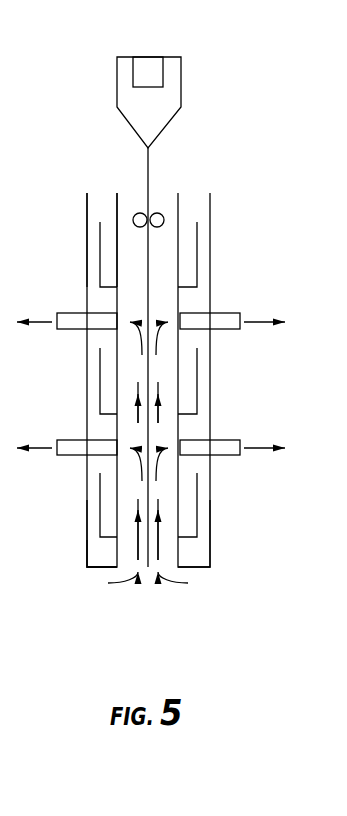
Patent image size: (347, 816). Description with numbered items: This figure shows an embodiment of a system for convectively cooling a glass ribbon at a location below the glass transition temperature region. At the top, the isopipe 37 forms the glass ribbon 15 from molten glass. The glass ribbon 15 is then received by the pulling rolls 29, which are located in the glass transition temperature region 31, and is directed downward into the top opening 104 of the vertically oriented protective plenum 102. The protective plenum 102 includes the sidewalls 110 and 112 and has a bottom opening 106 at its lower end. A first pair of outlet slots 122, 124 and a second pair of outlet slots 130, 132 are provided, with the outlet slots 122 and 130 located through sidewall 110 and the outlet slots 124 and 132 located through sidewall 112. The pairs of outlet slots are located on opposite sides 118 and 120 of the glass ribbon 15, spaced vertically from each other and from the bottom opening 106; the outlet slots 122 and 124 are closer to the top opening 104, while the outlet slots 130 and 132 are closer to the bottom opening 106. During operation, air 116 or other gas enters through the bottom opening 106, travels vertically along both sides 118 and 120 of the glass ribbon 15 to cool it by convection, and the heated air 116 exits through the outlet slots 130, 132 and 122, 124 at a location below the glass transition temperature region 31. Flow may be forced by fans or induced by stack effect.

The isopipe 37 is at (208, 87).
The glass ribbon 15 is at (150, 172).
The top opening 104 is at (122, 186).
The protective plenum 102 is at (216, 507).
The glass transition temperature region 31 is at (66, 172).
The pulling rolls 29 is at (162, 215).
The outlet slot 122 is at (98, 326).
The outlet slot 124 is at (200, 320).
The outlet slot 130 is at (80, 440).
The outlet slot 132 is at (226, 440).
The side of the glass ribbon 120 is at (158, 373).
The side of the glass ribbon 118 is at (145, 492).
The sidewall 110 is at (87, 543).
The sidewall 112 is at (210, 545).
The bottom opening 106 is at (88, 578).
The air 116 is at (27, 322).